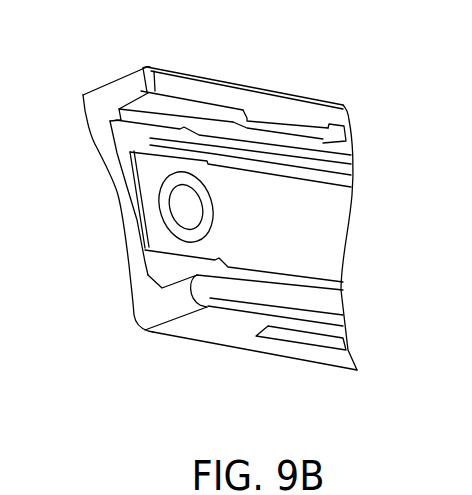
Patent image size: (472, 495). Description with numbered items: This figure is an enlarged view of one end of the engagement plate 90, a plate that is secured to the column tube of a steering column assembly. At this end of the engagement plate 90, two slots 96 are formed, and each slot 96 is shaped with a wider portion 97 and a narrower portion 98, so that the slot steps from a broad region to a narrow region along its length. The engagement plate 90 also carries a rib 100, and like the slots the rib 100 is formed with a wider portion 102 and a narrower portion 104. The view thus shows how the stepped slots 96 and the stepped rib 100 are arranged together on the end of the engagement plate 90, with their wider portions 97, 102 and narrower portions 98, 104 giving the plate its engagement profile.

The engagement plate 90 is at (270, 62).
The slot 96 is at (322, 160).
The wider portion 97 is at (143, 137).
The narrower portion 98 is at (250, 156).
The rib 100 is at (226, 217).
The wider portion 102 is at (322, 233).
The narrower portion 104 is at (147, 197).